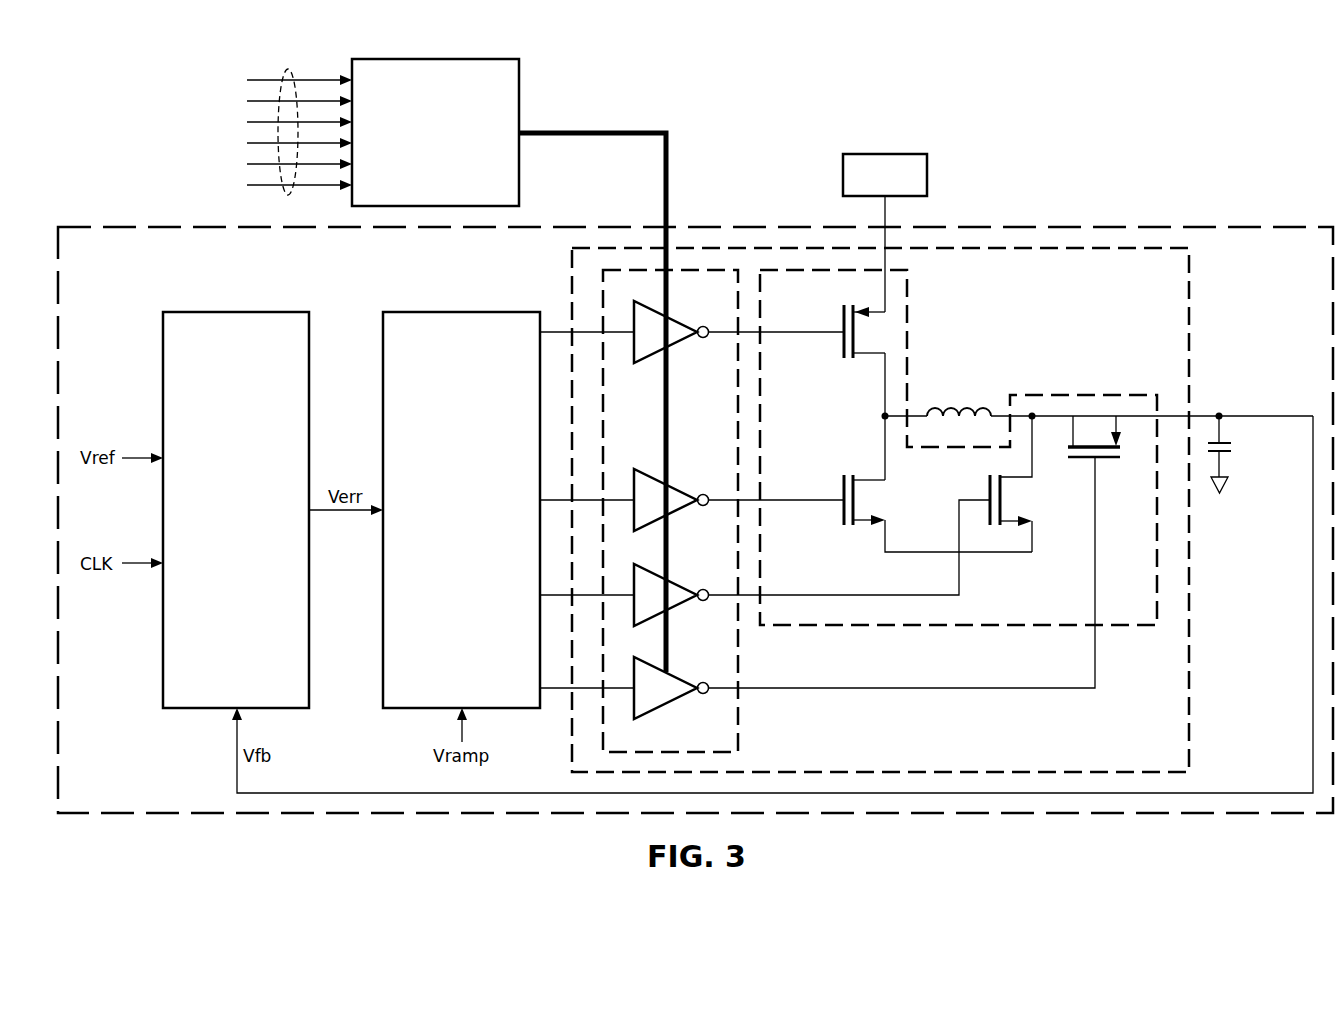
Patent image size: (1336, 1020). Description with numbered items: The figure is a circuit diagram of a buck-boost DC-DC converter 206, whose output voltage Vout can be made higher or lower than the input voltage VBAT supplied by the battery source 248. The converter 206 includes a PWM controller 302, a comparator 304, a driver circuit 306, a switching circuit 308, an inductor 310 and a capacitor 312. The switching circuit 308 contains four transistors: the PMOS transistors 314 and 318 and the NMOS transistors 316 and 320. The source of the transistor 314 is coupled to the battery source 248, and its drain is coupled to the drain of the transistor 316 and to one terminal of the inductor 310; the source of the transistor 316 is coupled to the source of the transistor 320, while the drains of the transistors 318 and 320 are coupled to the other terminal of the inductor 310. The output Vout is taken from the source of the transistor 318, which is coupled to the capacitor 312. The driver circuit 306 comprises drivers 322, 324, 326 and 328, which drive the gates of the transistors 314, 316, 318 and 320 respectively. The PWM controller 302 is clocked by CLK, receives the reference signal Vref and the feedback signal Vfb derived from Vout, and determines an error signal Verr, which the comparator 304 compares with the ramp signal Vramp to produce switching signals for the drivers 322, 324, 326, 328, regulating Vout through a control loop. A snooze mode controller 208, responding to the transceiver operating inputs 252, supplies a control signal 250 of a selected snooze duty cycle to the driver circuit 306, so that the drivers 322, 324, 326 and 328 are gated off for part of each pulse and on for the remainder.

The DC-DC converter 206 is at (1224, 220).
The snooze mode controller 208 is at (435, 132).
The battery source 248 is at (899, 154).
The control signal 250 is at (594, 133).
The transceiver operating input(s) 252 is at (290, 80).
The pulse width modulation (PWM) controller 302 is at (236, 510).
The comparator 304 is at (461, 510).
The driver circuit 306 is at (748, 724).
The switching circuit 308 is at (1101, 385).
The inductor 310 is at (963, 398).
The capacitor 312 is at (1231, 447).
The transistor 314 is at (844, 319).
The transistor 316 is at (844, 516).
The transistor 318 is at (1118, 460).
The transistor 320 is at (990, 483).
The driver 322 is at (680, 343).
The driver 324 is at (680, 511).
The driver 326 is at (680, 699).
The driver 328 is at (680, 606).